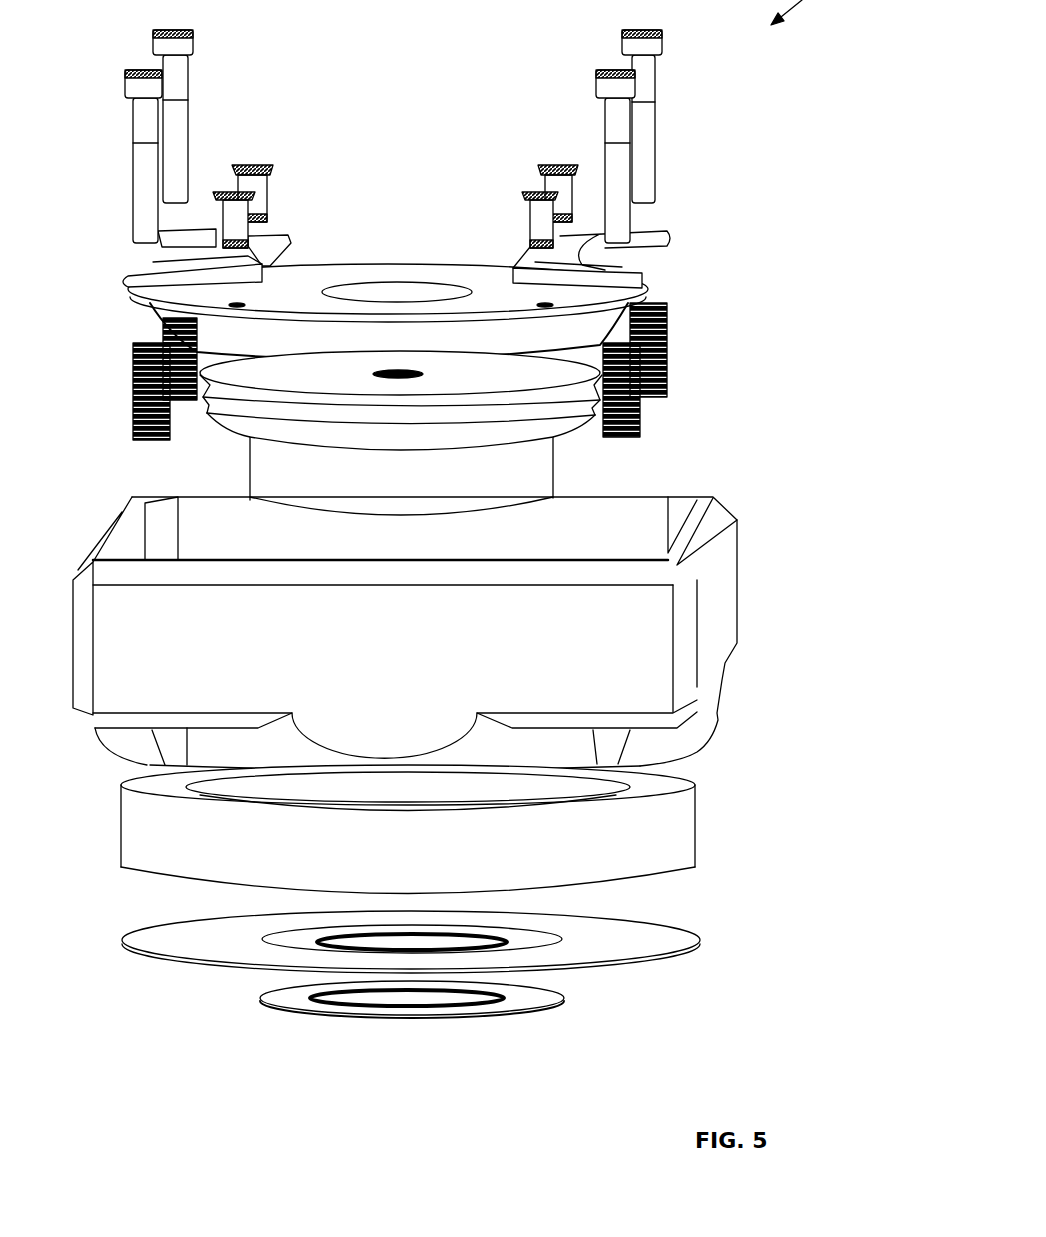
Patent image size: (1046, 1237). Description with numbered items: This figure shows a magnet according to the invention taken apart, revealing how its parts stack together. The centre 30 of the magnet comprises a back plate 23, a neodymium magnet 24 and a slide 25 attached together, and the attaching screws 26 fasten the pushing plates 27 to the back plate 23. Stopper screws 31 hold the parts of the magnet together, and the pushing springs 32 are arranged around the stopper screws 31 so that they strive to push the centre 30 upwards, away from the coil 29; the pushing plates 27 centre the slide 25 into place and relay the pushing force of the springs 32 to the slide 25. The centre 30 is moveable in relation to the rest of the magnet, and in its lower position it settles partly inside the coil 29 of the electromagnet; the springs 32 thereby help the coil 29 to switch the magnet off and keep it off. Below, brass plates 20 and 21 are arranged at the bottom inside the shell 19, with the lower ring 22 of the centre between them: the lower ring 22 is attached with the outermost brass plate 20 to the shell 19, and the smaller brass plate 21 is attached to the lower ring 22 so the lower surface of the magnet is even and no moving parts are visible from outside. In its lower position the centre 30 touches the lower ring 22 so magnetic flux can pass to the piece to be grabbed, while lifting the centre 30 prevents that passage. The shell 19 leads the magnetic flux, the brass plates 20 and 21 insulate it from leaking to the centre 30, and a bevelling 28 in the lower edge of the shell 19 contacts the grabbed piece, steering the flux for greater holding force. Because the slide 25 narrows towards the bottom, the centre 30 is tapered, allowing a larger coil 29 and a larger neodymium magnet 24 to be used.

The shell 19 is at (650, 628).
The outermost brass plate 20 is at (677, 949).
The smaller brass plate 21 is at (363, 940).
The lower ring of the centre 22 is at (535, 998).
The back plate 23 is at (648, 296).
The neodymium magnet 24 is at (580, 374).
The slide 25 is at (562, 435).
The attaching screws of the pushing plates 26 is at (560, 183).
The pushing plates 27 is at (575, 254).
The bevelling 28 is at (557, 761).
The coil 29 is at (653, 845).
The centre 30 is at (540, 478).
The stopper screws 31 is at (654, 62).
The pushing springs 32 is at (653, 340).